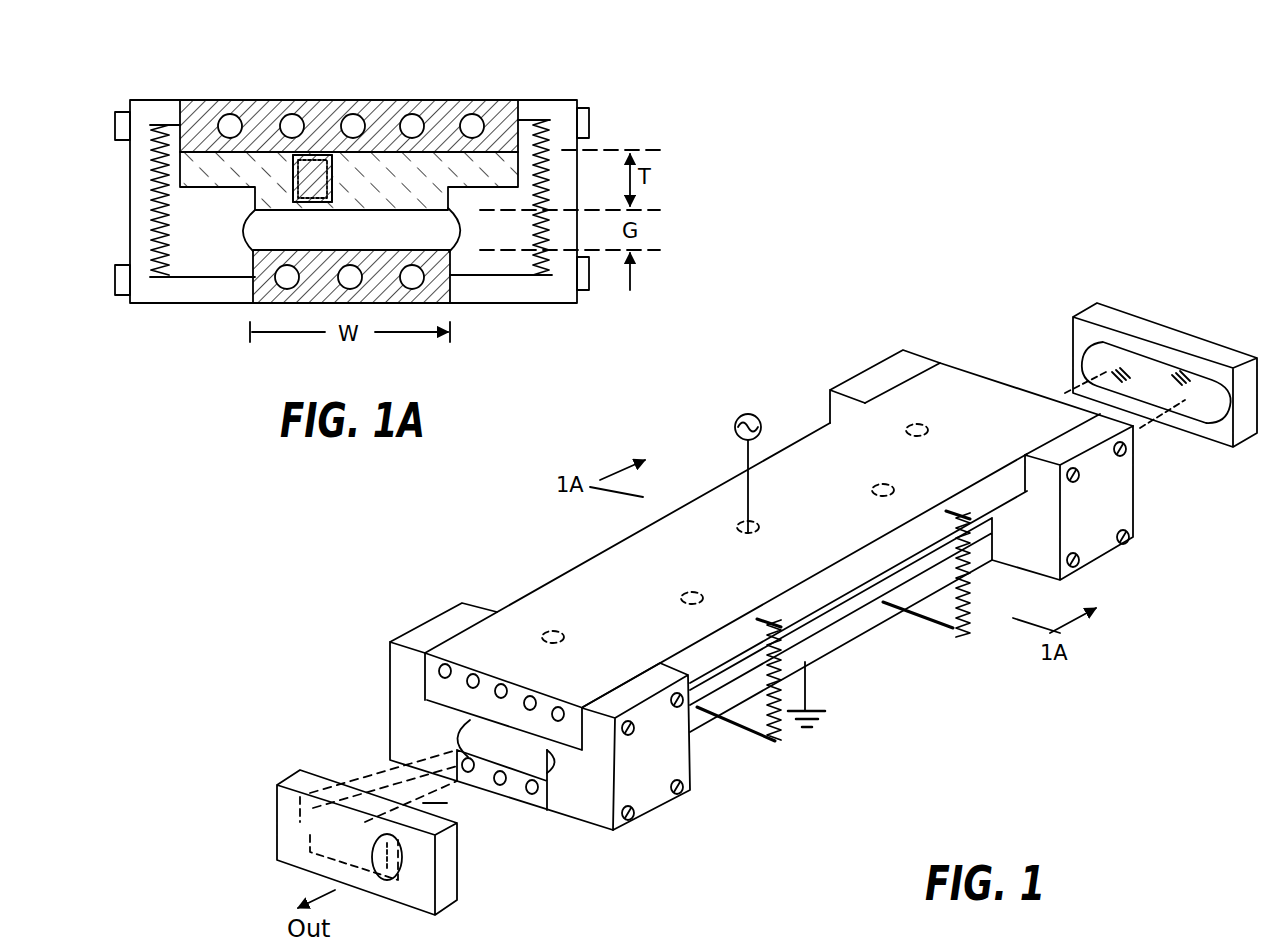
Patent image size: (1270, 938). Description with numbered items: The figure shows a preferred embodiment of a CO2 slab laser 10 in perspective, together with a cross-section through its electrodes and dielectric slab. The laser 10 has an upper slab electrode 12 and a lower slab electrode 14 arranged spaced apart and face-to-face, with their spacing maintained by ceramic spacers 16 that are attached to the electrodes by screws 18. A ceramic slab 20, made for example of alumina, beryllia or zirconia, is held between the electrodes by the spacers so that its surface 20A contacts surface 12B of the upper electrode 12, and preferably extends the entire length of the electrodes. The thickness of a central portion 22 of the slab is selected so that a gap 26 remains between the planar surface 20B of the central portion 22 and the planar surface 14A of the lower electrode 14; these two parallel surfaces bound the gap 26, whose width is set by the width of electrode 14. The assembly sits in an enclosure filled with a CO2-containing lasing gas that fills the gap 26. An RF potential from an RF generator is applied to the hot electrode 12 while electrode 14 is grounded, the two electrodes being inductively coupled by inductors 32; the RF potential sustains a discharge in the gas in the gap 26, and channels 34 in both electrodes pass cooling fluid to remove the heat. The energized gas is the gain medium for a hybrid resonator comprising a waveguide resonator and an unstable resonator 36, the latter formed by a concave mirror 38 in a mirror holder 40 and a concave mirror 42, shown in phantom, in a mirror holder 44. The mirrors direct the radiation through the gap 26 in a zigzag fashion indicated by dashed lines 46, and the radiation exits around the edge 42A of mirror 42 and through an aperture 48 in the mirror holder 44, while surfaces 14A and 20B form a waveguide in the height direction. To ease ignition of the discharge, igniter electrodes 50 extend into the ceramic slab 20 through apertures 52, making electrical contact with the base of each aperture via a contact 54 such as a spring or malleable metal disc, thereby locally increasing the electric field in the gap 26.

In FIG. 1, the CO2 slab laser 10 is at (962, 745).
In FIG. 1A, the CO2 slab laser 10 is at (188, 372).
In FIG. 1, the upper slab electrode 12 is at (578, 560).
In FIG. 1A, the upper slab electrode 12 is at (499, 98).
In FIG. 1, the surface of electrode 12 12B is at (427, 692).
In FIG. 1, the lower slab electrode 14 is at (857, 634).
In FIG. 1A, the lower slab electrode 14 is at (455, 290).
In FIG. 1, the planar surface of electrode 14 14A is at (537, 778).
In FIG. 1A, the planar surface of electrode 14 14A is at (249, 295).
In FIG. 1, the ceramic spacers 16 is at (422, 618).
In FIG. 1A, the ceramic spacers 16 is at (127, 102).
In FIG. 1, the screws 18 is at (690, 788).
In FIG. 1A, the screws 18 is at (590, 122).
In FIG. 1, the ceramic slab 20 is at (1009, 512).
In FIG. 1A, the ceramic slab 20 is at (209, 190).
In FIG. 1, the surface of the slab 20A is at (458, 736).
In FIG. 1, the planar surface of central portion 20B is at (513, 752).
In FIG. 1A, the planar surface of central portion 20B is at (430, 207).
In FIG. 1, the central portion of the ceramic slab 22 is at (456, 752).
In FIG. 1A, the central portion of the ceramic slab 22 is at (259, 193).
In FIG. 1, the gap 26 is at (484, 748).
In FIG. 1A, the gap 26 is at (363, 239).
In FIG. 1, the inductors 32 is at (776, 742).
In FIG. 1, the channels 34 is at (473, 674).
In FIG. 1A, the channels 34 is at (290, 113).
In FIG. 1, the unstable resonator 36 is at (383, 786).
In FIG. 1, the concave mirror 38 is at (1095, 360).
In FIG. 1, the mirror holder 40 is at (1120, 313).
In FIG. 1, the concave mirror 42 is at (300, 817).
In FIG. 1, the edge of mirror 42 42A is at (383, 832).
In FIG. 1, the mirror holder 44 is at (300, 775).
In FIG. 1, the dashed lines 46 is at (373, 785).
In FIG. 1, the aperture 48 is at (457, 912).
In FIG. 1, the igniter electrodes 50 is at (900, 427).
In FIG. 1A, the igniter electrodes 50 is at (288, 165).
In FIG. 1A, the apertures 52 is at (333, 200).
In FIG. 1A, the contact 54 is at (309, 153).